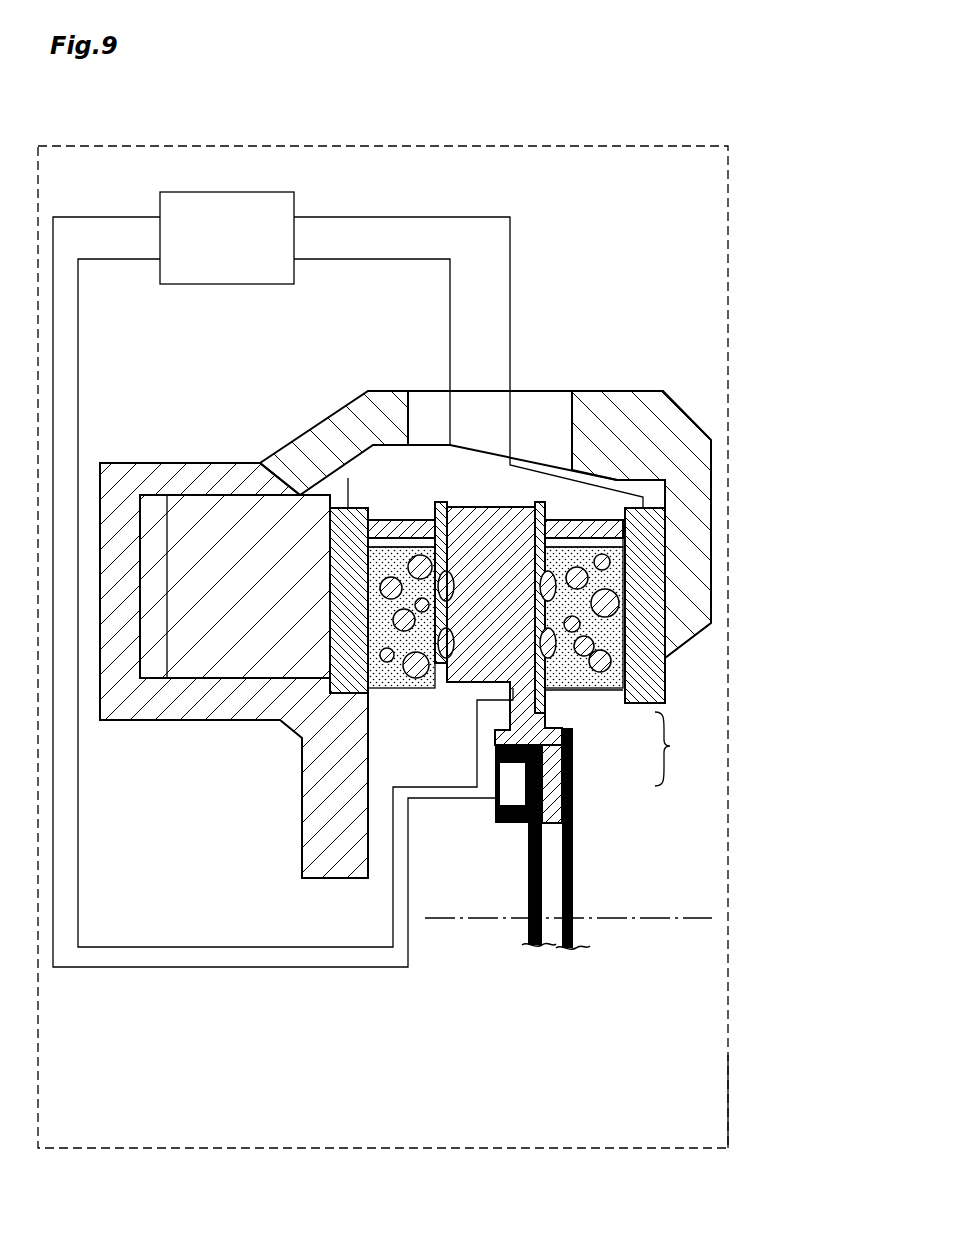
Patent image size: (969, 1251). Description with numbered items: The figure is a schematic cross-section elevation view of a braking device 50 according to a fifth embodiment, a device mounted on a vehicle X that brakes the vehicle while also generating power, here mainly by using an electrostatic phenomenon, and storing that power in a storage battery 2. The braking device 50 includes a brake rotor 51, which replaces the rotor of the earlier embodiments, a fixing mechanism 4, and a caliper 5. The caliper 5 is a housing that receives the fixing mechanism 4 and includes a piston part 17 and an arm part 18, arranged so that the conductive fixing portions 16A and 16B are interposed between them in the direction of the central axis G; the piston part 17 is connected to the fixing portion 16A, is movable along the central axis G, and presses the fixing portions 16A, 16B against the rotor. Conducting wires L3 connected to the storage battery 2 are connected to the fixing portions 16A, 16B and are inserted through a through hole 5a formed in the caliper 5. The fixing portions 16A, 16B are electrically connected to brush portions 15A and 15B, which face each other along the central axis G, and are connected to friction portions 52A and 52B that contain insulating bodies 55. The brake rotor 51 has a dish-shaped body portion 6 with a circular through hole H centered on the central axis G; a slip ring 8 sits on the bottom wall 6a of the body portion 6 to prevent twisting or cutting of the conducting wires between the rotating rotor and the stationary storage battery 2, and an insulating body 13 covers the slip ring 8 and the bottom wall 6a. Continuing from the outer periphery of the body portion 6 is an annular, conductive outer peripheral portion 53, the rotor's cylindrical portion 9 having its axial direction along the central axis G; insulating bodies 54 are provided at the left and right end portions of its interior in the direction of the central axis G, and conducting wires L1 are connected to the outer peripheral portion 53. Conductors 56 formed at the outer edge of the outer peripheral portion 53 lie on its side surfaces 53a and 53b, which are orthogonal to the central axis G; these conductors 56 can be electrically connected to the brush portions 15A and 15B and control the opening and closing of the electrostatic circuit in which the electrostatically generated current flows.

The braking device 50 is at (736, 126).
The storage battery 2 is at (213, 192).
The conducting wires L3 is at (450, 302).
The conducting wires L1 is at (427, 788).
The piston part 17 is at (195, 527).
The fixing portion 16A is at (333, 610).
The brush portion 15A is at (365, 470).
The caliper 5 is at (630, 386).
The through hole 5a is at (560, 414).
The brush portion 15B is at (642, 487).
The arm part 18 is at (700, 497).
The fixing portion 16B is at (690, 548).
The fixing mechanism 4 is at (394, 498).
The friction portion 52A is at (365, 623).
The friction portion 52B is at (637, 637).
The side surface 53a is at (420, 513).
The side surface 53b is at (597, 513).
The insulating bodies 54 is at (560, 662).
The insulating bodies 55 is at (385, 566).
The conductors 56 is at (605, 505).
The outer peripheral portion 53 is at (560, 730).
The bottom wall 6a is at (562, 768).
The slip ring 8 is at (510, 775).
The insulating body 13 is at (527, 890).
The body portion 6 is at (585, 807).
The through hole H is at (548, 825).
The cylindrical portion 9 is at (568, 678).
The brake rotor 51 is at (677, 749).
The central axis G is at (665, 914).
The vehicle X is at (733, 1055).